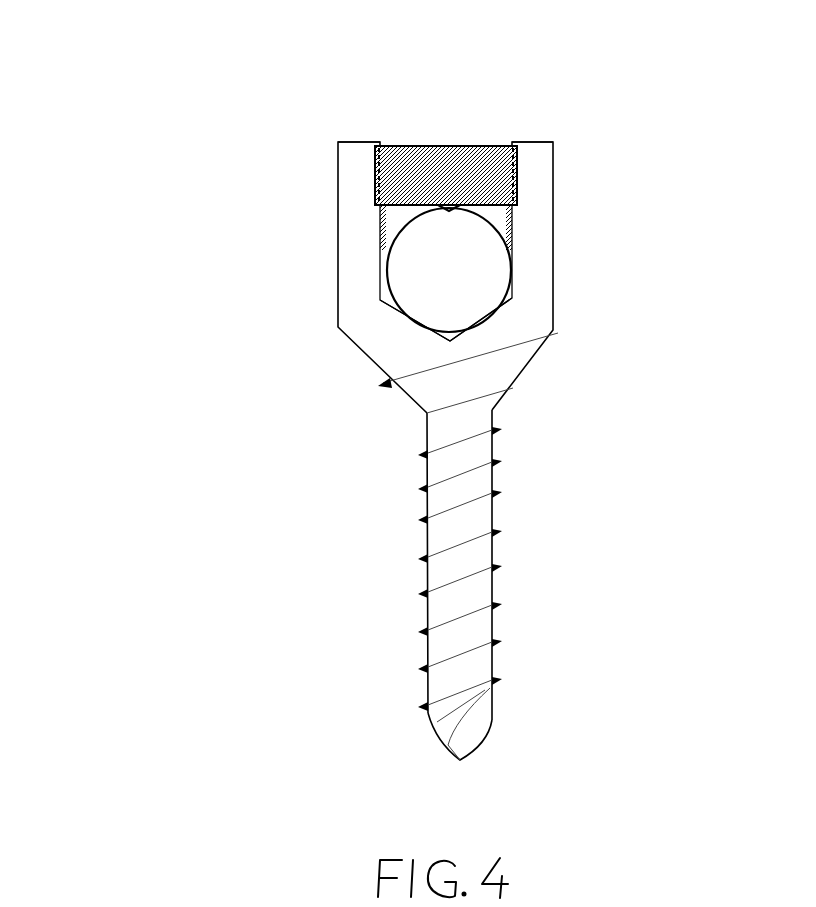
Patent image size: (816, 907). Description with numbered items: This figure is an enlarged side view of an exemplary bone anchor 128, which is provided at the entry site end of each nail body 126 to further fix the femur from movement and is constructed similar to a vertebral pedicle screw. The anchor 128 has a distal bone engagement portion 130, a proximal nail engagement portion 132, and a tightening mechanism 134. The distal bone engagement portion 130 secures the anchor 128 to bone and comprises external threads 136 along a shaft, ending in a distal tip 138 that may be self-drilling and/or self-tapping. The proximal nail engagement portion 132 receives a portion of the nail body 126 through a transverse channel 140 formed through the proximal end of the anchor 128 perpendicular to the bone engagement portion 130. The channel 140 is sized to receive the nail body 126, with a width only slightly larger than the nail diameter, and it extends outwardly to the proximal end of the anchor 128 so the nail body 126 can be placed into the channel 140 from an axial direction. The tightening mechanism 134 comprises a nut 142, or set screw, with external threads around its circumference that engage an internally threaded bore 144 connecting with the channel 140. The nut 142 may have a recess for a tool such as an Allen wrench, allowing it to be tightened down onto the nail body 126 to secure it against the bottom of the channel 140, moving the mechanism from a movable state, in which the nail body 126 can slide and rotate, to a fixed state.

The bone anchor 128 is at (390, 401).
The proximal nail engagement portion 132 is at (357, 277).
The tightening mechanism 134 is at (477, 92).
The internally threaded bore 144 is at (336, 273).
The transverse channel 140 is at (529, 320).
The nut 142 is at (434, 128).
The nail body 126 is at (539, 270).
The distal bone engagement portion 130 is at (566, 565).
The external threads 136 is at (407, 522).
The distal tip 138 is at (368, 724).